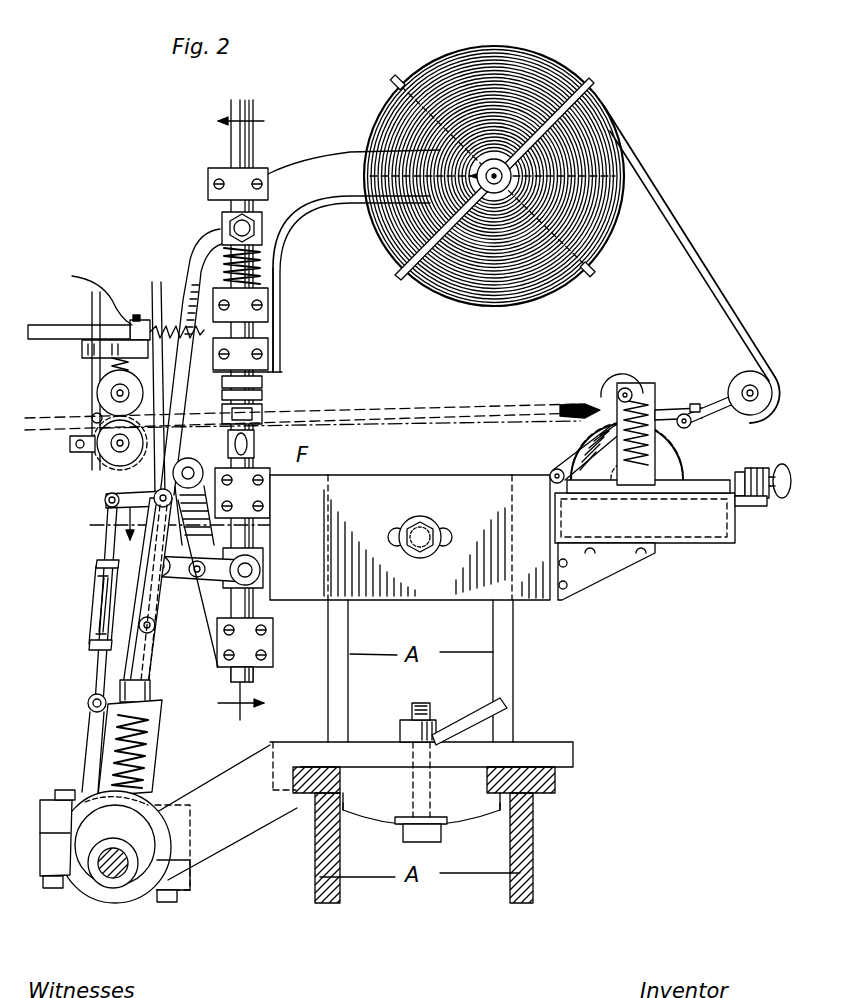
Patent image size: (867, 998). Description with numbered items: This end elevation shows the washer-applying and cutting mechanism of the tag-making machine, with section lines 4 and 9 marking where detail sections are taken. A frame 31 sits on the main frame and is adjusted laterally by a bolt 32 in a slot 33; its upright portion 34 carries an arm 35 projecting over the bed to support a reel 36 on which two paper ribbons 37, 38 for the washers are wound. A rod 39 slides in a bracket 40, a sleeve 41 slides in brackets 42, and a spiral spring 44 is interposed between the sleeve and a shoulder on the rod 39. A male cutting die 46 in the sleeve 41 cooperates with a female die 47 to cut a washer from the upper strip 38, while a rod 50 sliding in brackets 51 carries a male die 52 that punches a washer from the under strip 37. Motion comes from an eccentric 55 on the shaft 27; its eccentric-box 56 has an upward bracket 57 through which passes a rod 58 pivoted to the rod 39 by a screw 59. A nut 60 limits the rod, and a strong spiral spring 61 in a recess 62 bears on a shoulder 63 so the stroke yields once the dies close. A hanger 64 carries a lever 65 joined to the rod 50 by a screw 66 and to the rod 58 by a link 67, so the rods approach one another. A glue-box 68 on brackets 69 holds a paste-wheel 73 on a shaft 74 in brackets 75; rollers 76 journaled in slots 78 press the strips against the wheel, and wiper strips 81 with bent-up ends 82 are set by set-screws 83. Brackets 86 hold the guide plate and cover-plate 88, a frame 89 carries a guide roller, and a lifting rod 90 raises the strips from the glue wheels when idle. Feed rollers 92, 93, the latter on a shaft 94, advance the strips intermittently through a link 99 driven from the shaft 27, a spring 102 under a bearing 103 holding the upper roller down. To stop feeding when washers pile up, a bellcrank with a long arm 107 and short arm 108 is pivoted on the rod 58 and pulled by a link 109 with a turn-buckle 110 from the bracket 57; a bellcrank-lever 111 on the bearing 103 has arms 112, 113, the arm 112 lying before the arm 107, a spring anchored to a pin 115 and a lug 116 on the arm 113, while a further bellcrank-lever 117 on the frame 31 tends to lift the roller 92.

The section line 4— 4 is at (250, 115).
The section line 9— 9 is at (201, 526).
The shaft 27 is at (113, 880).
The frame 31 is at (412, 490).
The bolt 32 is at (421, 548).
The slot 33 is at (442, 530).
The upright portion 34 is at (269, 353).
The arm 35 is at (372, 152).
The reel 36 is at (580, 92).
The ribbon of paper 37 is at (648, 185).
The ribbon of paper 38 is at (663, 225).
The rod 39 is at (228, 153).
The bracket 40 is at (254, 172).
The sleeve 41 is at (281, 280).
The brackets 42 is at (292, 358).
The spiral spring 44 is at (264, 262).
The male cutting die 46 is at (258, 383).
The female cutting die 47 is at (268, 412).
The rod 50 is at (275, 636).
The brackets 51 is at (256, 672).
The male die 52 is at (228, 446).
The eccentric 55 is at (130, 820).
The eccentric-box 56 is at (190, 876).
The bracket 57 is at (90, 745).
The rod 58 is at (194, 252).
The screw 59 is at (232, 224).
The nut 60 is at (122, 690).
The spiral spring 61 is at (152, 765).
The recess 62 is at (152, 732).
The shoulder 63 is at (106, 795).
The hanger 64 is at (271, 492).
The lever 65 is at (264, 568).
The screw 66 is at (252, 576).
The link 67 is at (160, 605).
The glue-box 68 is at (692, 505).
The brackets 69 is at (598, 565).
The paste-wheel 73 is at (572, 464).
The shaft 74 is at (615, 483).
The brackets 75 is at (650, 493).
The rollers 76 is at (626, 388).
The slots 78 is at (640, 394).
The strips of metal 81 is at (745, 508).
The bent-up ends 82 is at (752, 470).
The set-screws 83 is at (780, 500).
The brackets 86 is at (703, 422).
The cover-plate 88 is at (742, 378).
The frame 89 is at (712, 406).
The lifting rod 90 is at (604, 398).
The roller 92 is at (70, 443).
The roller 93 is at (118, 465).
The shaft 94 is at (108, 448).
The link 99 is at (146, 660).
The spring 102 is at (270, 378).
The bearing 103 is at (150, 330).
The upright arm 107 is at (154, 284).
The horizontal arm 108 is at (106, 505).
The link 109 is at (112, 518).
The turn-buckle 110 is at (96, 615).
The bellcrank-lever 111 is at (66, 284).
The arm 112 is at (269, 306).
The arm 113 is at (66, 316).
The pin 115 is at (150, 316).
The lug 116 is at (82, 350).
The bellcrank-lever 117 is at (97, 393).